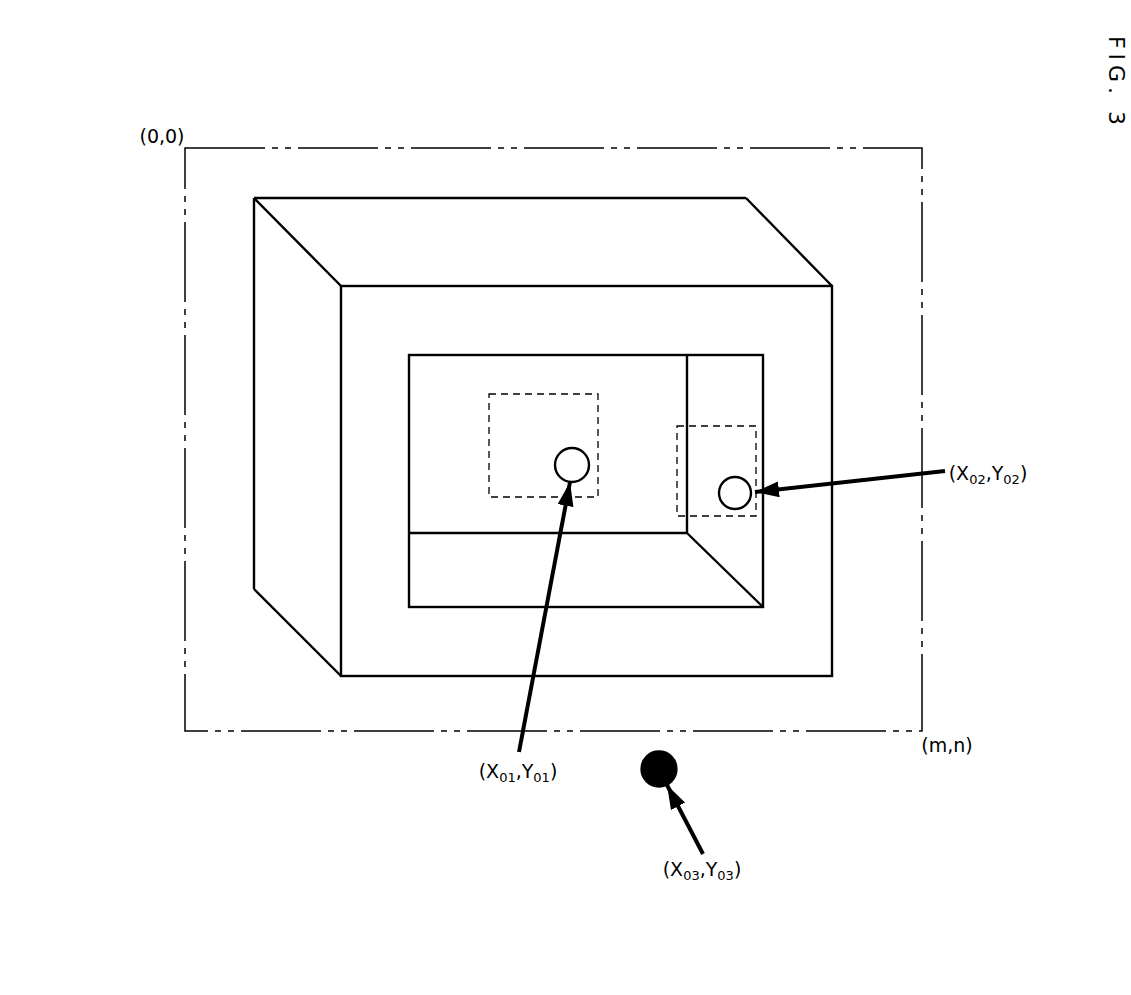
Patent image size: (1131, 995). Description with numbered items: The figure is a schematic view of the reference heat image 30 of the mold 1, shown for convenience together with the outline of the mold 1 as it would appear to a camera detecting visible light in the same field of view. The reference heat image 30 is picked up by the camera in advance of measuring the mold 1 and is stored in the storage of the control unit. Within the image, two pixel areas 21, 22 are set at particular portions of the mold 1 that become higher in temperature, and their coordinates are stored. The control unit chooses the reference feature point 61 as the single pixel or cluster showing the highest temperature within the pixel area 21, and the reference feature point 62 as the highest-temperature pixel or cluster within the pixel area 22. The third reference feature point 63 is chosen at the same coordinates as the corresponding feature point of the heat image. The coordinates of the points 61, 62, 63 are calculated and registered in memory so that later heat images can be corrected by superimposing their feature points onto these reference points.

The mold 1 is at (615, 210).
The reference heat image 30 is at (554, 147).
The pixel area 21 is at (522, 386).
The pixel area 22 is at (717, 418).
The reference feature point 61 is at (577, 466).
The reference feature point 62 is at (735, 494).
The reference feature point 63 is at (641, 770).